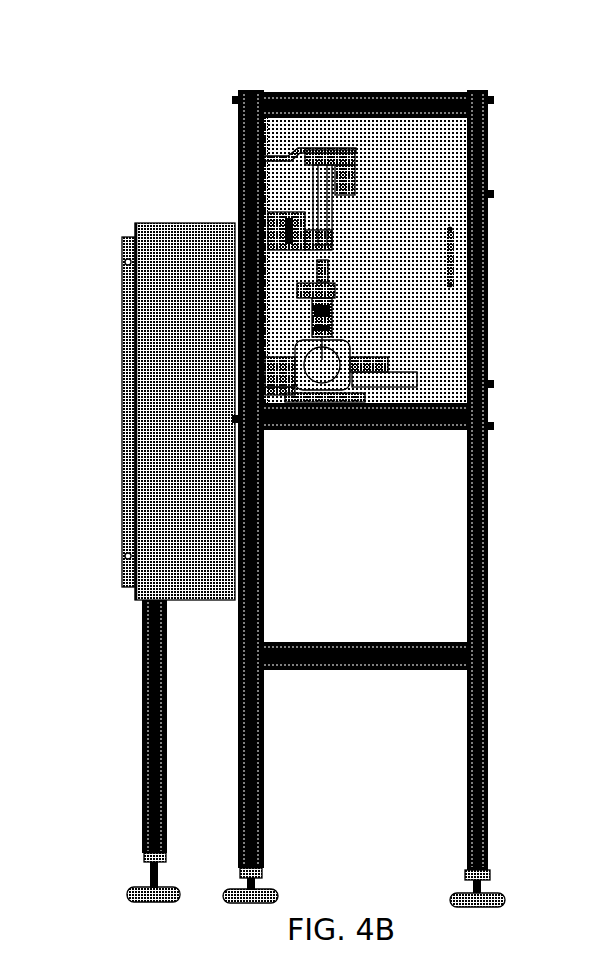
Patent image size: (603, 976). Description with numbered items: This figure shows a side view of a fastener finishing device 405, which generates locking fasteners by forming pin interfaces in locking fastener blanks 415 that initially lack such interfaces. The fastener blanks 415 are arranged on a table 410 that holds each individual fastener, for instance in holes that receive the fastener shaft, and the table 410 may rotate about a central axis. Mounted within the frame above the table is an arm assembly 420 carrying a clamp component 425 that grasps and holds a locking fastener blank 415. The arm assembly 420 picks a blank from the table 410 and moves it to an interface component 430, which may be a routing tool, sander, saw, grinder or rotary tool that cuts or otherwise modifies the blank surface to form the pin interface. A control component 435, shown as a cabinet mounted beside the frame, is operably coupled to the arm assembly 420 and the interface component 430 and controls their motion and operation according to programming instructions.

The fastener finishing device 405 is at (540, 63).
The table 410 is at (405, 378).
The locking fastener blank 415 is at (387, 355).
The arm assembly 420 is at (353, 163).
The clamp component 425 is at (338, 308).
The interface component 430 is at (358, 396).
The control component 435 is at (146, 361).